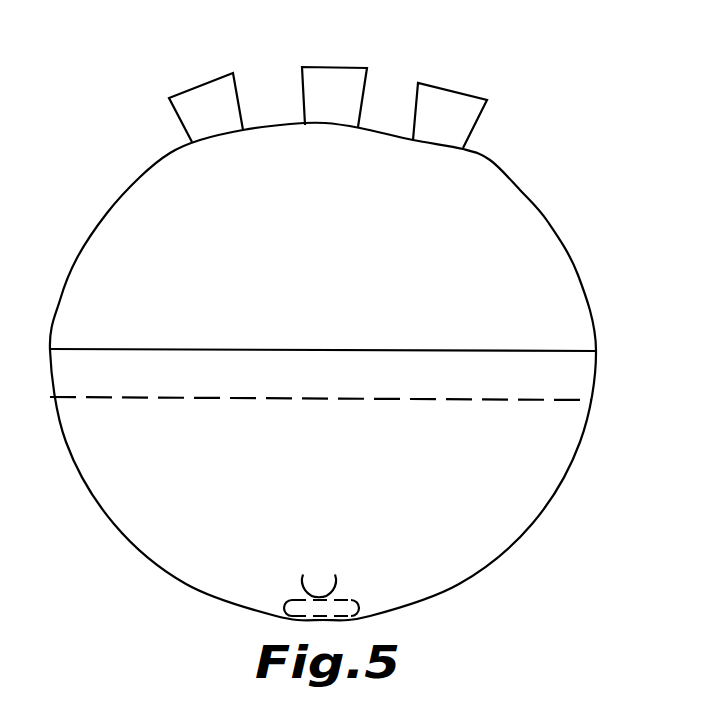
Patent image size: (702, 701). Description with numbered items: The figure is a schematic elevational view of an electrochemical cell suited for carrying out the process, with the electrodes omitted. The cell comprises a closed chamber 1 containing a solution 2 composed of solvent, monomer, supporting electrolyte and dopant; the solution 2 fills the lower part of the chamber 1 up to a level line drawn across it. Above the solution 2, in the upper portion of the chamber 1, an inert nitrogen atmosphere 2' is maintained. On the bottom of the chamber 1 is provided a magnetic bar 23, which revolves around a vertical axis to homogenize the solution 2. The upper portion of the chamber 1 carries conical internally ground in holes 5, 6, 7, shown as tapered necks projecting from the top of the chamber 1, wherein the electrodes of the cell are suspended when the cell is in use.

The closed chamber 1 is at (578, 275).
The solution 2 is at (344, 408).
The inert nitrogen atmosphere 2' is at (584, 199).
The conical internally ground in hole 5 is at (453, 110).
The conical internally ground in hole 6 is at (343, 87).
The conical internally ground in hole 7 is at (220, 92).
The magnetic bar 23 is at (360, 607).